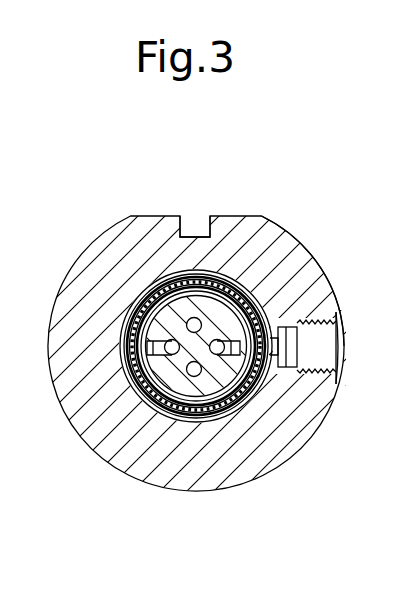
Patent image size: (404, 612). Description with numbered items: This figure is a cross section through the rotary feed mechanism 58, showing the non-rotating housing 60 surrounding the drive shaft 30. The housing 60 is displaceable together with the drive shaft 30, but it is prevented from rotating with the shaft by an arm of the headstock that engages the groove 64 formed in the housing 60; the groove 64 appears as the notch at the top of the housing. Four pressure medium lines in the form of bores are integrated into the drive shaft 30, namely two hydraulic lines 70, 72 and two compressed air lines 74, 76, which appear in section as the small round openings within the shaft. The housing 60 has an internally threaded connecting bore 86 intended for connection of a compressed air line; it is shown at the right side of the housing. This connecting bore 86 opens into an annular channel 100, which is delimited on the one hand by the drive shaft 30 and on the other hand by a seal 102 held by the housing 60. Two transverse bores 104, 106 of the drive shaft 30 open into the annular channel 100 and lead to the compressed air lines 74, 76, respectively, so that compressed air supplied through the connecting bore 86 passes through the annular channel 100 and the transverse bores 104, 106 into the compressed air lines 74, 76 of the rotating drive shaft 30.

The drive shaft 30 is at (214, 311).
The rotary feed mechanism 58 is at (282, 216).
The housing 60 is at (299, 237).
The groove 64 is at (188, 233).
The hydraulic line 70 is at (173, 288).
The hydraulic line 72 is at (194, 378).
The compressed air line 74 is at (146, 404).
The compressed air line 76 is at (218, 356).
The connecting bore 86 is at (324, 326).
The annular channel 100 is at (172, 356).
The seal 102 is at (143, 302).
The transverse bore 104 is at (125, 316).
The transverse bore 106 is at (258, 312).